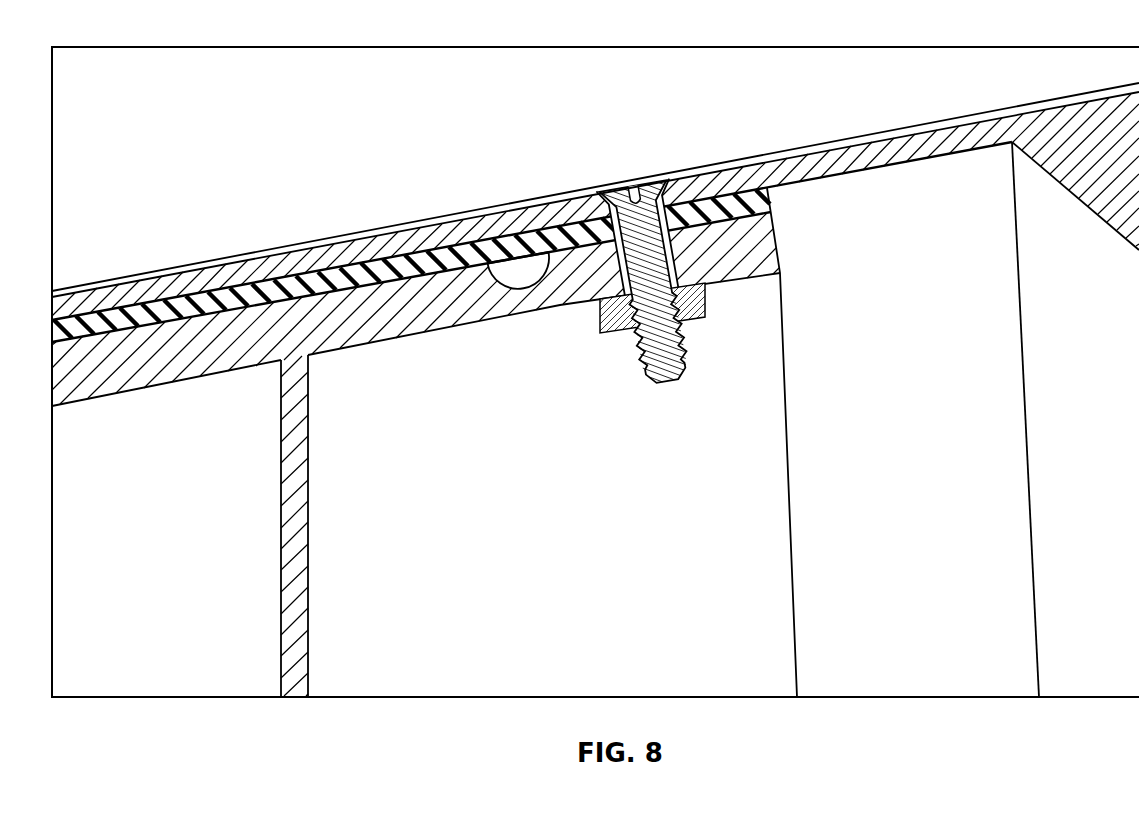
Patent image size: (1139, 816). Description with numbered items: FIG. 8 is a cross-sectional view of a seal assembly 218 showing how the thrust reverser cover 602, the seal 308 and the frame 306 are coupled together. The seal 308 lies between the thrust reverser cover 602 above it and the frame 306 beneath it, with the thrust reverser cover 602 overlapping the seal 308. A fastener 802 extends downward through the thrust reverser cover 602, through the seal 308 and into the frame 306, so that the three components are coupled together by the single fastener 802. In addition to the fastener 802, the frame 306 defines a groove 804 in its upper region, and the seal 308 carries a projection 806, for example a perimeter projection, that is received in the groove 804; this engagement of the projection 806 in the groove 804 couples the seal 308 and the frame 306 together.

The panel assembly 218 is at (680, 104).
The frame 306 is at (405, 325).
The seal 308 is at (273, 290).
The thrust reverser cover 602 is at (368, 248).
The fastener 802 is at (620, 186).
The groove 804 is at (508, 283).
The projection 806 is at (512, 270).